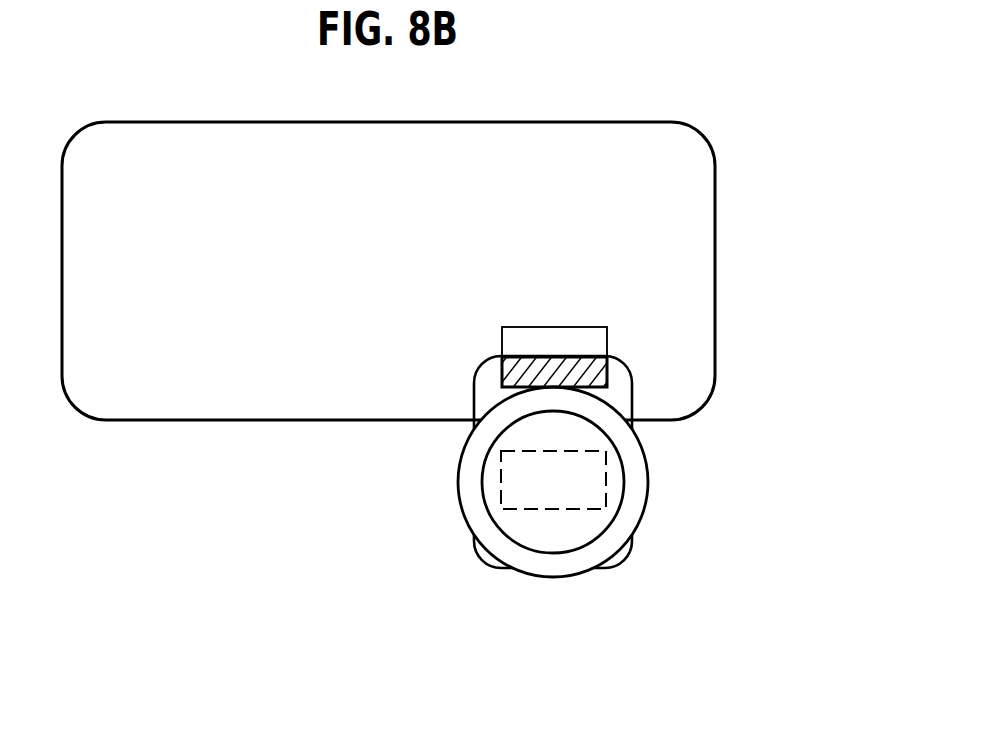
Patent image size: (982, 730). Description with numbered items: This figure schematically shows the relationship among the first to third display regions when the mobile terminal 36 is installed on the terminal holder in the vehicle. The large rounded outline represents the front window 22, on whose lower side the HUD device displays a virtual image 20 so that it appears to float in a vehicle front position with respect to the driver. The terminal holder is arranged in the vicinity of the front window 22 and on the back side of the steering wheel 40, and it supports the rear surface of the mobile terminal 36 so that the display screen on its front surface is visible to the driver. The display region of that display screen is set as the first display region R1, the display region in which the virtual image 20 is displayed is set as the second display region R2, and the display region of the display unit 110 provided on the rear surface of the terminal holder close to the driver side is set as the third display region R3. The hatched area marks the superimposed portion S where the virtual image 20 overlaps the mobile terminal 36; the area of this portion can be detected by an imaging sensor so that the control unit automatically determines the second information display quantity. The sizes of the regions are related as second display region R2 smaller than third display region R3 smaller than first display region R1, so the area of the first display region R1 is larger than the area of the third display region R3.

The front window 22 is at (715, 270).
The virtual image 20 is at (536, 312).
The mobile terminal 36 is at (633, 383).
The steering wheel 40 is at (648, 483).
The display unit 110 is at (553, 509).
The superimposed portion S is at (577, 371).
The first display region R1 is at (488, 393).
The second display region R2 is at (502, 343).
The third display region R3 is at (613, 544).